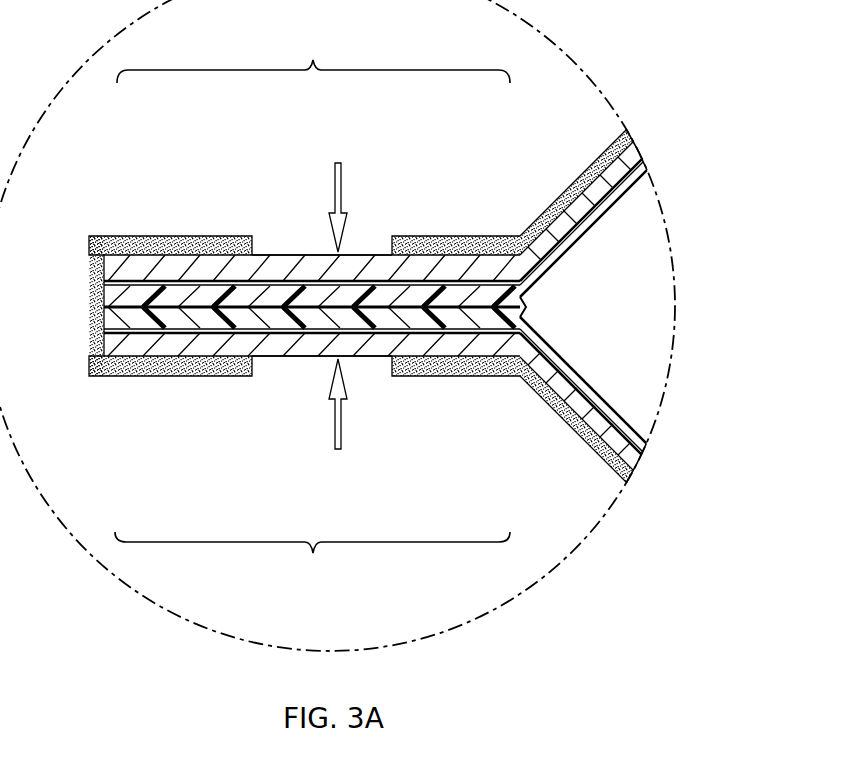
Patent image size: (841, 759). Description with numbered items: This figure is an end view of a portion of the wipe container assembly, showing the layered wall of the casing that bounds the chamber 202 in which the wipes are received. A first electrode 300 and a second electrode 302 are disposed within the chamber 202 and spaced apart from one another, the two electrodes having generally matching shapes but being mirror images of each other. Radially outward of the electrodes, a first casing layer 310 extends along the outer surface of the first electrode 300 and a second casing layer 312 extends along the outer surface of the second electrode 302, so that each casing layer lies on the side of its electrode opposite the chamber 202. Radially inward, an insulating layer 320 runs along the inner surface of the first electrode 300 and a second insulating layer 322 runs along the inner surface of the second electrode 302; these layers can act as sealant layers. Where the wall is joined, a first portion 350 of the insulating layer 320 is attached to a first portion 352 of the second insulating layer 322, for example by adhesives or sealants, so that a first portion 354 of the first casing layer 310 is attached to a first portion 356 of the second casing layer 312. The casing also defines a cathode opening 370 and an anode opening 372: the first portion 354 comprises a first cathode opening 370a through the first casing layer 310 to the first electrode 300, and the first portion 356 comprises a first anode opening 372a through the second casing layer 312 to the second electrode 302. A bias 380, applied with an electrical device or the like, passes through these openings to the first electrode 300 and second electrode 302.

The chamber 202 is at (664, 285).
The first electrode 300 is at (110, 261).
The second electrode 302 is at (110, 343).
The first casing layer 310 is at (109, 258).
The second casing layer 312 is at (106, 377).
The insulating layer 320 is at (110, 294).
The second insulating layer 322 is at (110, 318).
The first portion of the insulating layer 350 is at (313, 57).
The first portion of the first casing layer 354 is at (313, 57).
The first portion of the second insulating layer 352 is at (312, 557).
The first portion of the second casing layer 356 is at (312, 557).
The cathode opening 370 is at (372, 204).
The anode opening 372 is at (372, 392).
The first cathode opening 370a is at (253, 253).
The first anode opening 372a is at (251, 358).
The bias 380 is at (334, 172).